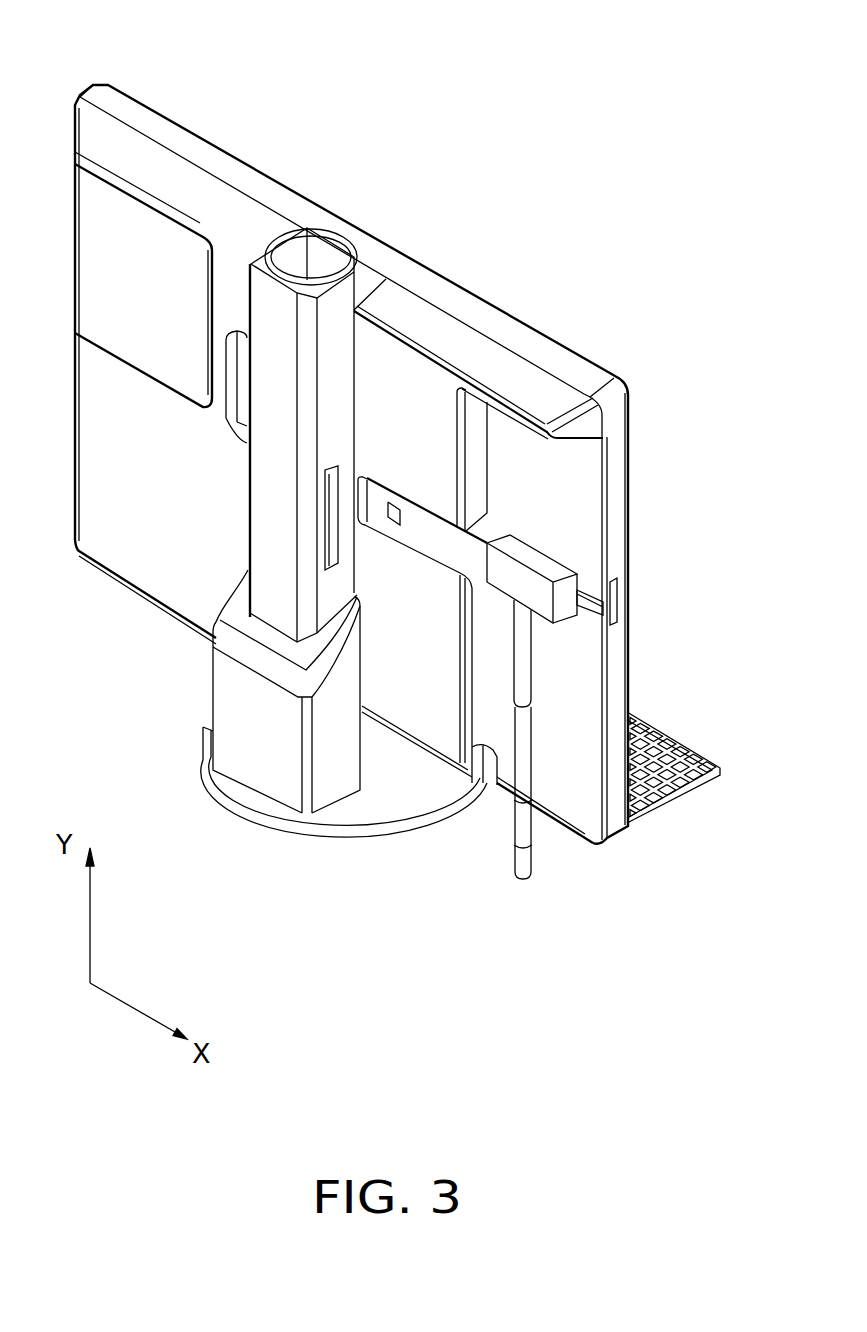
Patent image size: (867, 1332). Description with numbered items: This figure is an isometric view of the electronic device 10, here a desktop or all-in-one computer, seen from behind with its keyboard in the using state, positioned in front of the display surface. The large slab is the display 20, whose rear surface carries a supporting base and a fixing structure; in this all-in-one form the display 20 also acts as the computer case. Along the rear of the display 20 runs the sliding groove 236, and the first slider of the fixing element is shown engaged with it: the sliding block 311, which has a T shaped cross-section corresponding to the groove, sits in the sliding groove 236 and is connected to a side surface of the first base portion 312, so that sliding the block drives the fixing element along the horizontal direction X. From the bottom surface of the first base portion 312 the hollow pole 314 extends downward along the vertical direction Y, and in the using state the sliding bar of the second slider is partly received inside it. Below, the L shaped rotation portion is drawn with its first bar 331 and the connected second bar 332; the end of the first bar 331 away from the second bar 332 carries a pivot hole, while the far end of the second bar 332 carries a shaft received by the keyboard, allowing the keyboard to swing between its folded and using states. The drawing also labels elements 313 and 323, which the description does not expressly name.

The electronic device 10 is at (428, 36).
The display 20 is at (437, 280).
The sliding groove 236 is at (614, 606).
The sliding block 311 is at (530, 558).
The first base portion 312 is at (580, 592).
The latching assembly 313 is at (714, 462).
The hollow pole 314 is at (523, 670).
The lower connecting rod 323 is at (525, 727).
The first bar 331 is at (522, 858).
The second bar 332 is at (560, 847).